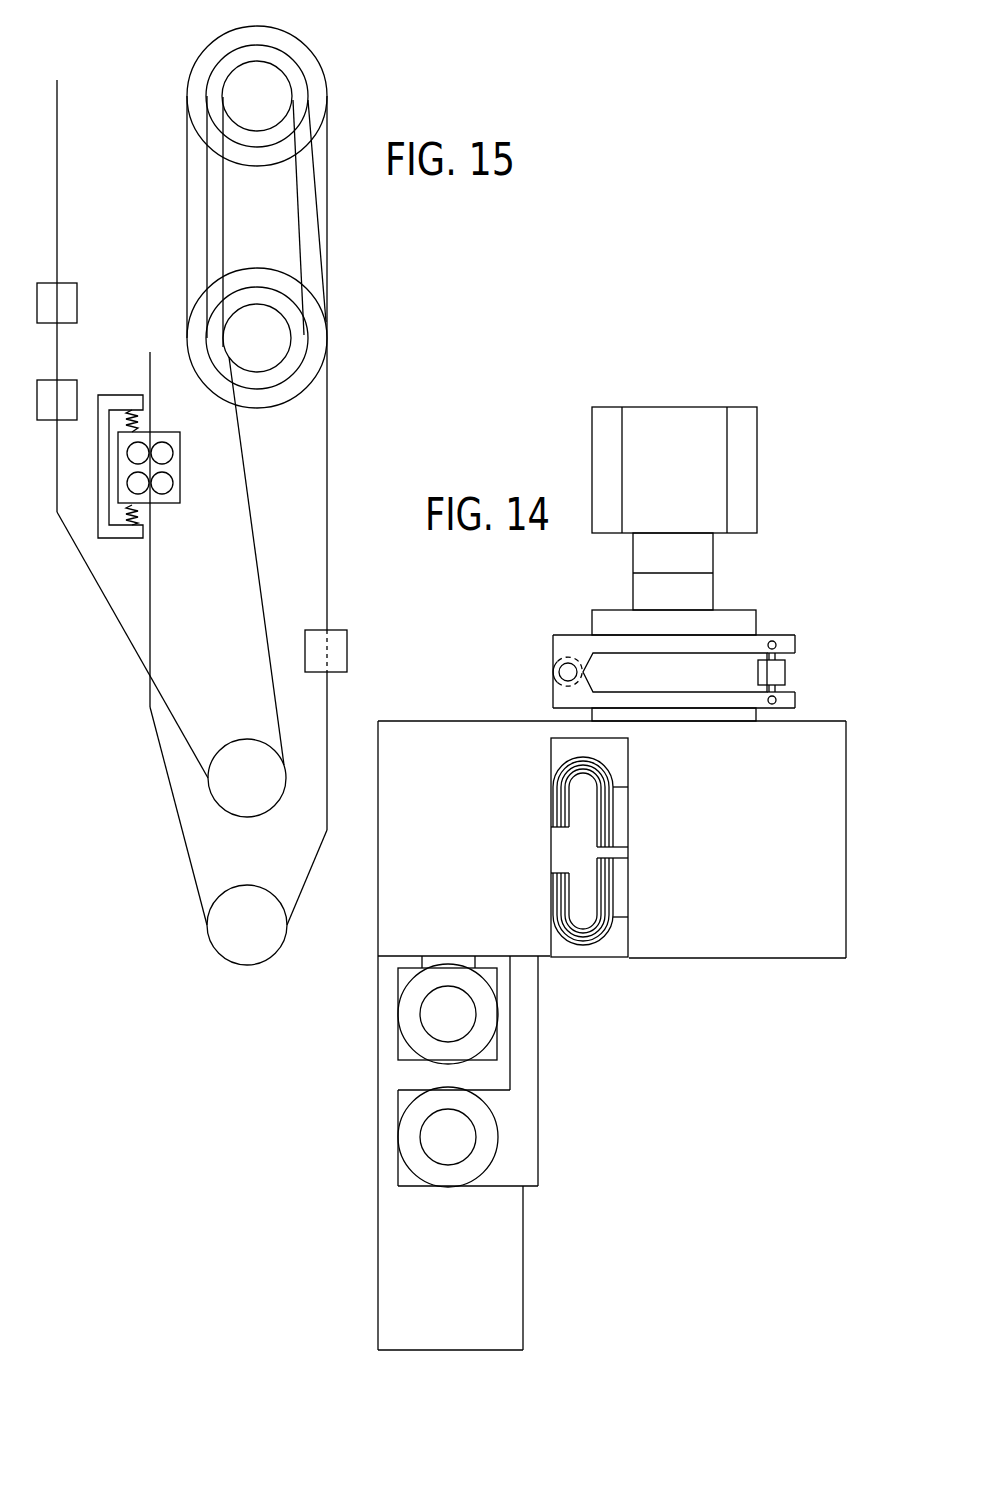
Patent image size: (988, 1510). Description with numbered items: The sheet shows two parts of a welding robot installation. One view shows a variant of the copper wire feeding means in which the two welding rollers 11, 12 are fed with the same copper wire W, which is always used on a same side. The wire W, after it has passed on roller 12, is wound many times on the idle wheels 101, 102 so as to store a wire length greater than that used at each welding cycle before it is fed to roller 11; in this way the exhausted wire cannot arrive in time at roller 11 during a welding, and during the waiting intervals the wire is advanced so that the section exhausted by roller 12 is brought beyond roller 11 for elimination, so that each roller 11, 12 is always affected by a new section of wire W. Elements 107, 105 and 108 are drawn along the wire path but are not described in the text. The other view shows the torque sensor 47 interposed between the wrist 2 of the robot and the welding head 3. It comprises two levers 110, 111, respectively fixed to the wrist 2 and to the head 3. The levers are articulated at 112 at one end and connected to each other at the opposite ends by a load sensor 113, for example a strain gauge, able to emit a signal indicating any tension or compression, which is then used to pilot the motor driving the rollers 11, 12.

In FIG. 15, the idle wheel 101 is at (317, 83).
In FIG. 15, the idle wheel 102 is at (317, 345).
In FIG. 15, the copper wire W is at (325, 508).
In FIG. 15, the guide 107 is at (67, 305).
In FIG. 15, the tension roller unit 105 is at (180, 503).
In FIG. 15, the sensor 108 is at (333, 643).
In FIG. 15, the welding roller 11 is at (242, 780).
In FIG. 14, the welding roller 11 is at (422, 1043).
In FIG. 15, the welding roller 12 is at (245, 925).
In FIG. 14, the welding roller 12 is at (410, 1135).
In FIG. 14, the wrist 2 is at (695, 553).
In FIG. 14, the torque sensor 47 is at (676, 657).
In FIG. 14, the lever 110 is at (620, 645).
In FIG. 14, the lever 111 is at (692, 700).
In FIG. 14, the articulation 112 is at (558, 672).
In FIG. 14, the load sensor 113 is at (799, 623).
In FIG. 14, the welding head 3 is at (589, 1035).